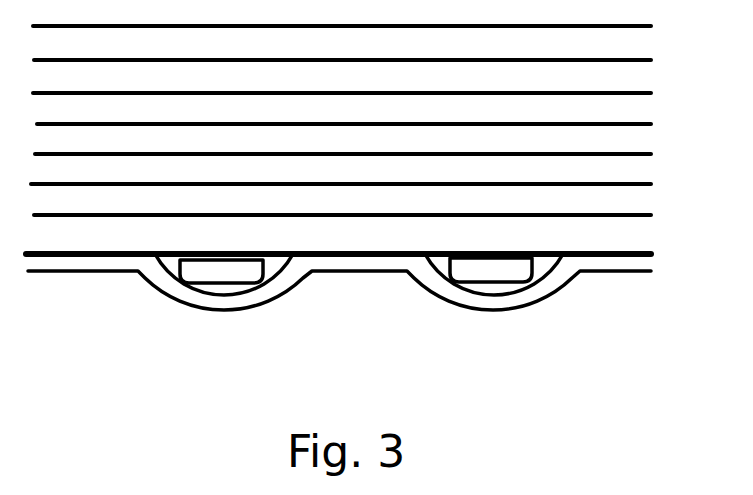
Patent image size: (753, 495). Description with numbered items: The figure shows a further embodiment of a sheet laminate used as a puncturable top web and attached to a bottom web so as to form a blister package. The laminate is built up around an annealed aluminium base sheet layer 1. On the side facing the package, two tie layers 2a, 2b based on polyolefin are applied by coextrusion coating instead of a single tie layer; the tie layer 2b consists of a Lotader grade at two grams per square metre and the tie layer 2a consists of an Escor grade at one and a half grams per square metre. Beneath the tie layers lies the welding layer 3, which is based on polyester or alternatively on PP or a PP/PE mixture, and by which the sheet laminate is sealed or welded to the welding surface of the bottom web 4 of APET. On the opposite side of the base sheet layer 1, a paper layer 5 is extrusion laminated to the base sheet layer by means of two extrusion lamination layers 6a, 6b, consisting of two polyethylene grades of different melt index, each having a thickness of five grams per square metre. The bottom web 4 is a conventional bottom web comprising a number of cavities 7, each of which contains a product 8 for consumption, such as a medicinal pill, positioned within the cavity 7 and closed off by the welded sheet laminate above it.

The base sheet layer 1 is at (363, 138).
The tie layer 2a is at (364, 170).
The tie layer 2b is at (362, 199).
The welding layer 3 is at (356, 234).
The bottom web 4 is at (357, 280).
The paper layer 5 is at (360, 36).
The extrusion lamination layer 6a is at (364, 74).
The extrusion lamination layer 6b is at (363, 107).
The cavity 7 is at (170, 268).
The product 8 is at (202, 278).